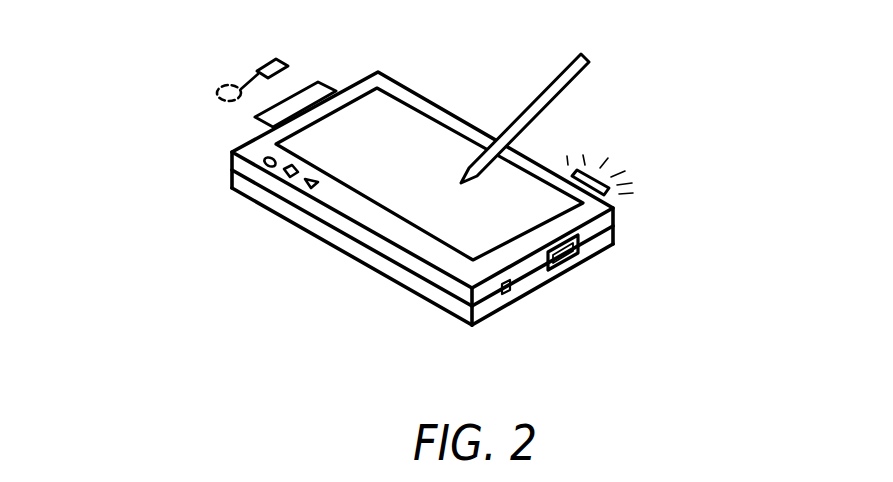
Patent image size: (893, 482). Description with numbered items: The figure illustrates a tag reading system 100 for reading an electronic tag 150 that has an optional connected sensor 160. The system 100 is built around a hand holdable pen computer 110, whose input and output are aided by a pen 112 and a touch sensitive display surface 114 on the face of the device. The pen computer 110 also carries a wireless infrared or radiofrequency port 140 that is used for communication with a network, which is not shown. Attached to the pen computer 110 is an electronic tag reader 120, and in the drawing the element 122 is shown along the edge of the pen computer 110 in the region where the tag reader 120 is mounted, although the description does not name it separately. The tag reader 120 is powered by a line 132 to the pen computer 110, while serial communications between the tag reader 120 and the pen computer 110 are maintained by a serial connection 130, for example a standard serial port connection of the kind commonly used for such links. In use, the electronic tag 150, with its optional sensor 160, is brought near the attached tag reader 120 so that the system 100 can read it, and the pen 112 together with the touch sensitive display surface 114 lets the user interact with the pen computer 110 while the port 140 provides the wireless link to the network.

The tag reading system 100 is at (661, 65).
The hand holdable pen computer 110 is at (598, 200).
The pen 112 is at (545, 87).
The touch sensitive display surface 114 is at (410, 205).
The electronic tag reader 120 is at (208, 179).
The top edge module 122 is at (320, 82).
The serial connection 130 is at (585, 247).
The line 132 is at (501, 294).
The wireless infrared or radiofrequency port 140 is at (595, 178).
The electronic tag 150 is at (277, 58).
The sensor 160 is at (221, 90).